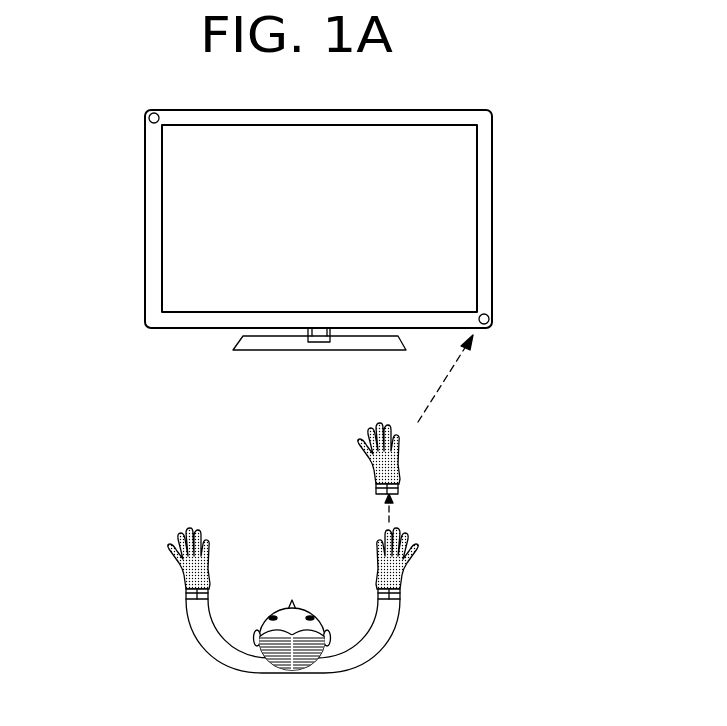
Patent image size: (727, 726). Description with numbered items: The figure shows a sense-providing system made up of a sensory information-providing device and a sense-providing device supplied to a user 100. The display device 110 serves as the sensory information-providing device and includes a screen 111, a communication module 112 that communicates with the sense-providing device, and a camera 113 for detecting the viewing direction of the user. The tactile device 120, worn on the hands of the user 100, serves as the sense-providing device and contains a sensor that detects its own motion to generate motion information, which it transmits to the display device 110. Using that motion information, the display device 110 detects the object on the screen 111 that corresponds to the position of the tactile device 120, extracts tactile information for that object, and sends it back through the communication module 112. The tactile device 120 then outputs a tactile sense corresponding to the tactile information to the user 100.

The user 100 is at (381, 636).
The display device 110 is at (414, 110).
The screen 111 is at (464, 241).
The communication module 112 is at (489, 319).
The camera 113 is at (149, 118).
The tactile device 120 is at (363, 560).